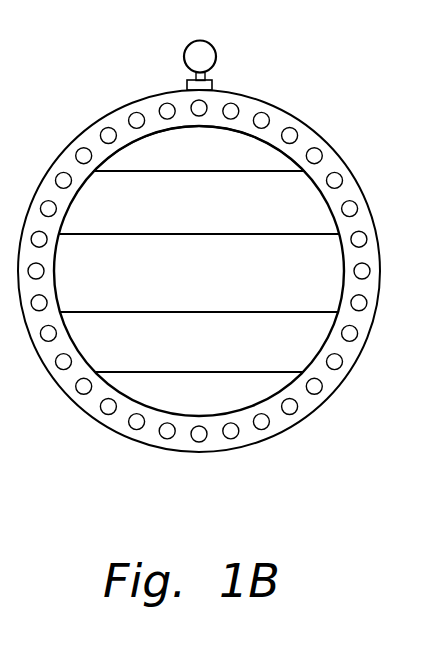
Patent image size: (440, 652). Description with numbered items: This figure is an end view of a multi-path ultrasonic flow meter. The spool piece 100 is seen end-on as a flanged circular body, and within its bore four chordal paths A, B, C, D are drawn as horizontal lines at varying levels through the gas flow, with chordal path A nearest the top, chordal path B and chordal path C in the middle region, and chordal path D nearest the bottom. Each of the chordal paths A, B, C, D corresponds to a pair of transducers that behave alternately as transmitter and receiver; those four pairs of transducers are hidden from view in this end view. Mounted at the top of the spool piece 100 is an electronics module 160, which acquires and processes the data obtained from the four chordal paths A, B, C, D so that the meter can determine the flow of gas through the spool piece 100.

The spool piece 100 is at (315, 134).
The electronics module 160 is at (212, 45).
The chordal path A is at (199, 148).
The chordal path B is at (199, 202).
The chordal path C is at (199, 288).
The chordal path D is at (199, 394).